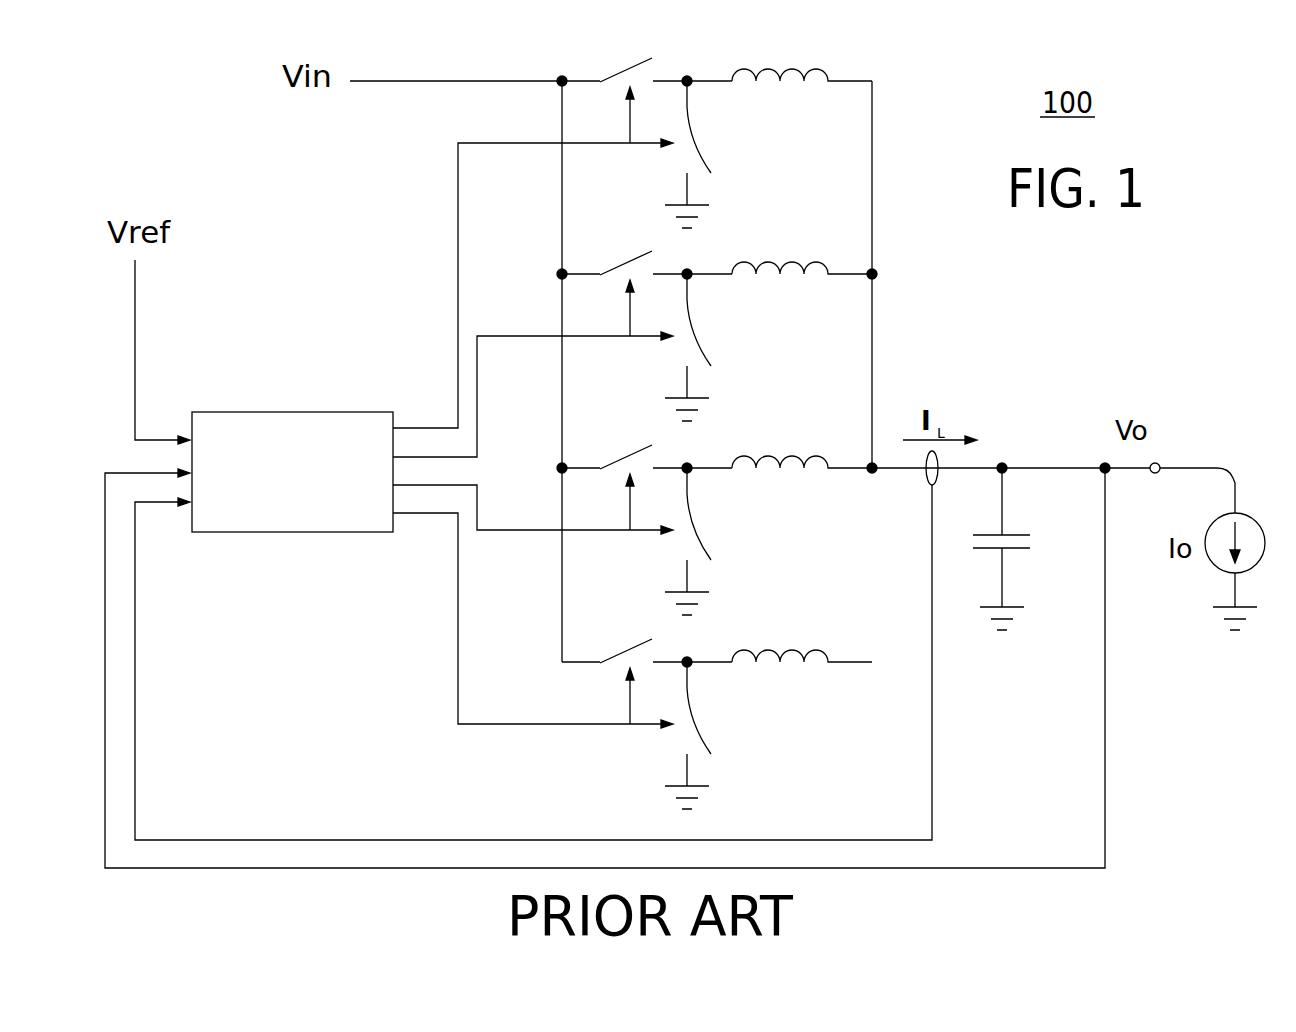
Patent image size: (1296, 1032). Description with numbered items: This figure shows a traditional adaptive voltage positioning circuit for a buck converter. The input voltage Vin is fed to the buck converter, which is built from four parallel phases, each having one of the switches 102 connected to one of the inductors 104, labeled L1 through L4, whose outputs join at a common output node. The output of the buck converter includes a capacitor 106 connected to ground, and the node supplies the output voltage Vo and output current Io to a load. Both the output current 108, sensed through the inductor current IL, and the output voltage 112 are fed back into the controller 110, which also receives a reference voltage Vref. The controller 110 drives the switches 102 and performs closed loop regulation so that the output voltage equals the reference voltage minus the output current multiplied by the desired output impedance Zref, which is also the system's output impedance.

The switches 102 is at (631, 66).
The inductors 104 is at (786, 86).
The capacitor 106 is at (1023, 552).
The output current 108 is at (932, 710).
The controller 110 is at (277, 532).
The output voltage 112 is at (1105, 705).